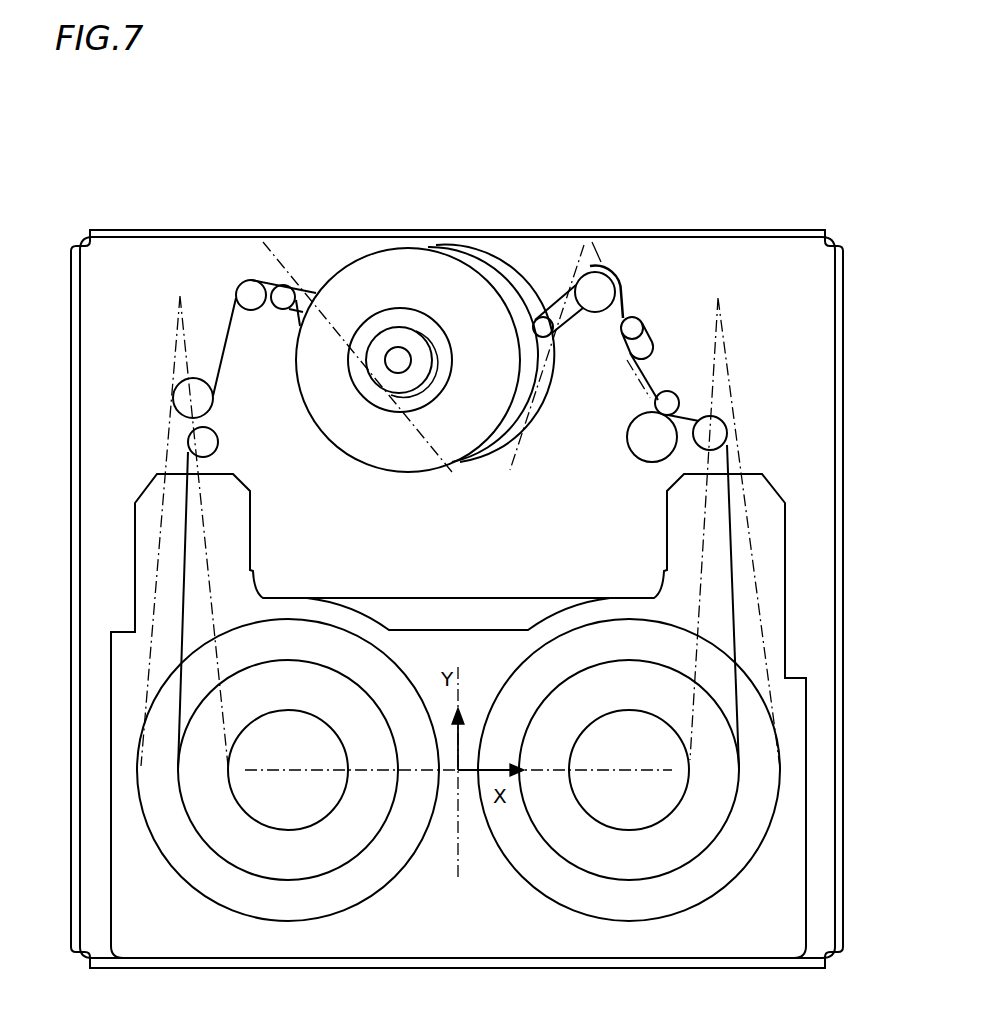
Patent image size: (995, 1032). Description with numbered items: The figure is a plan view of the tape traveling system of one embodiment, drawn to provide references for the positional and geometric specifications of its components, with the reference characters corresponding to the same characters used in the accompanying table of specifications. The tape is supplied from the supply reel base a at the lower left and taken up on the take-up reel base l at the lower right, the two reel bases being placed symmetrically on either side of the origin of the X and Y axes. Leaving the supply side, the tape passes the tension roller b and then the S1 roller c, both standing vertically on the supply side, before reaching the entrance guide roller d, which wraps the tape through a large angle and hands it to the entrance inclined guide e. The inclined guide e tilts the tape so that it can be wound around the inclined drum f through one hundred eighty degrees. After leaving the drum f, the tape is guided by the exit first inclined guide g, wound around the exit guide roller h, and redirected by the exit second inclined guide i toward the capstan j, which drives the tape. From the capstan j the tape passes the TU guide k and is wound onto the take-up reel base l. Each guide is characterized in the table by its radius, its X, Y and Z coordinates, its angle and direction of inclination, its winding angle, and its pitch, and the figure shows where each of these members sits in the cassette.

The supply reel base a is at (163, 809).
The tension roller b is at (204, 443).
The S1 roller c is at (182, 402).
The entrance guide roller d is at (250, 288).
The entrance inclined guide e is at (283, 296).
The drum f is at (420, 276).
The exit first inclined guide g is at (553, 316).
The exit guide roller h is at (600, 285).
The exit second inclined guide i is at (633, 326).
The capstan j is at (673, 400).
The take-up guide k is at (720, 433).
The take-up reel base l is at (758, 802).